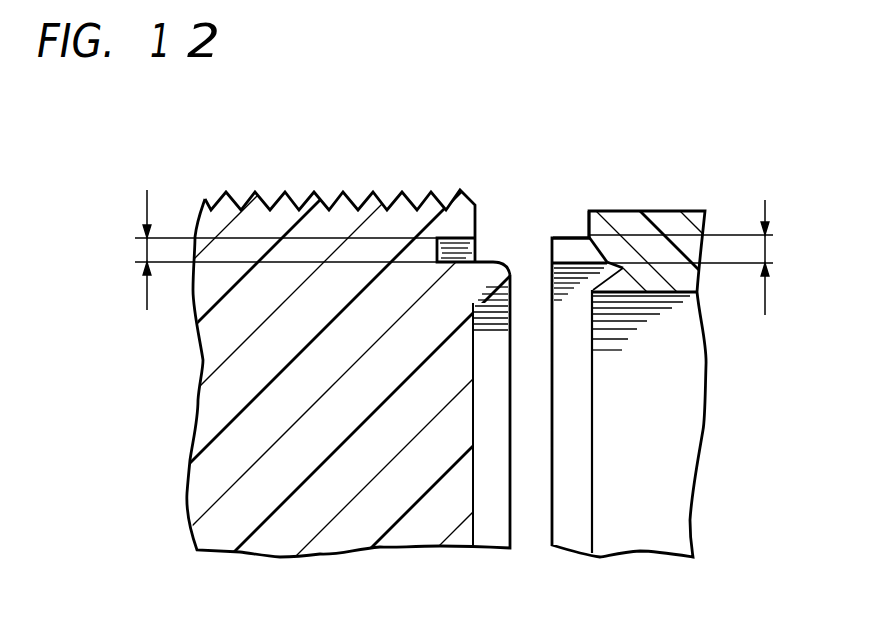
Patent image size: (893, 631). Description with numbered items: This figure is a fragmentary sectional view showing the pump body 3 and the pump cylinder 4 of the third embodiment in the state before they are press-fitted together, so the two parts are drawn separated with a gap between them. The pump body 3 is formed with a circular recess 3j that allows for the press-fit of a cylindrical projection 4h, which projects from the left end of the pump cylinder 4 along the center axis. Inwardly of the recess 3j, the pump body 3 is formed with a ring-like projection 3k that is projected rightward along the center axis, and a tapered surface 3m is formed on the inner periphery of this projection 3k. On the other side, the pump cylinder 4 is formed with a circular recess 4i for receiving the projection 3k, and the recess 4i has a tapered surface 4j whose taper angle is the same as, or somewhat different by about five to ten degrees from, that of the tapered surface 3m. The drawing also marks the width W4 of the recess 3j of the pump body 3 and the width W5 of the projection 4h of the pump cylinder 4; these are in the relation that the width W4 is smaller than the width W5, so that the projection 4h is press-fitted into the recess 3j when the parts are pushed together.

The pump body 3 is at (220, 400).
The circular recess 3j is at (459, 236).
The ring-like projection 3k is at (490, 277).
The tapered surface 3m is at (478, 292).
The pump cylinder 4 is at (668, 212).
The cylindrical projection 4h is at (568, 250).
The circular recess 4i is at (552, 280).
The tapered surface 4j is at (618, 272).
The width of the recess W4 is at (263, 250).
The width of the projection W5 is at (704, 257).